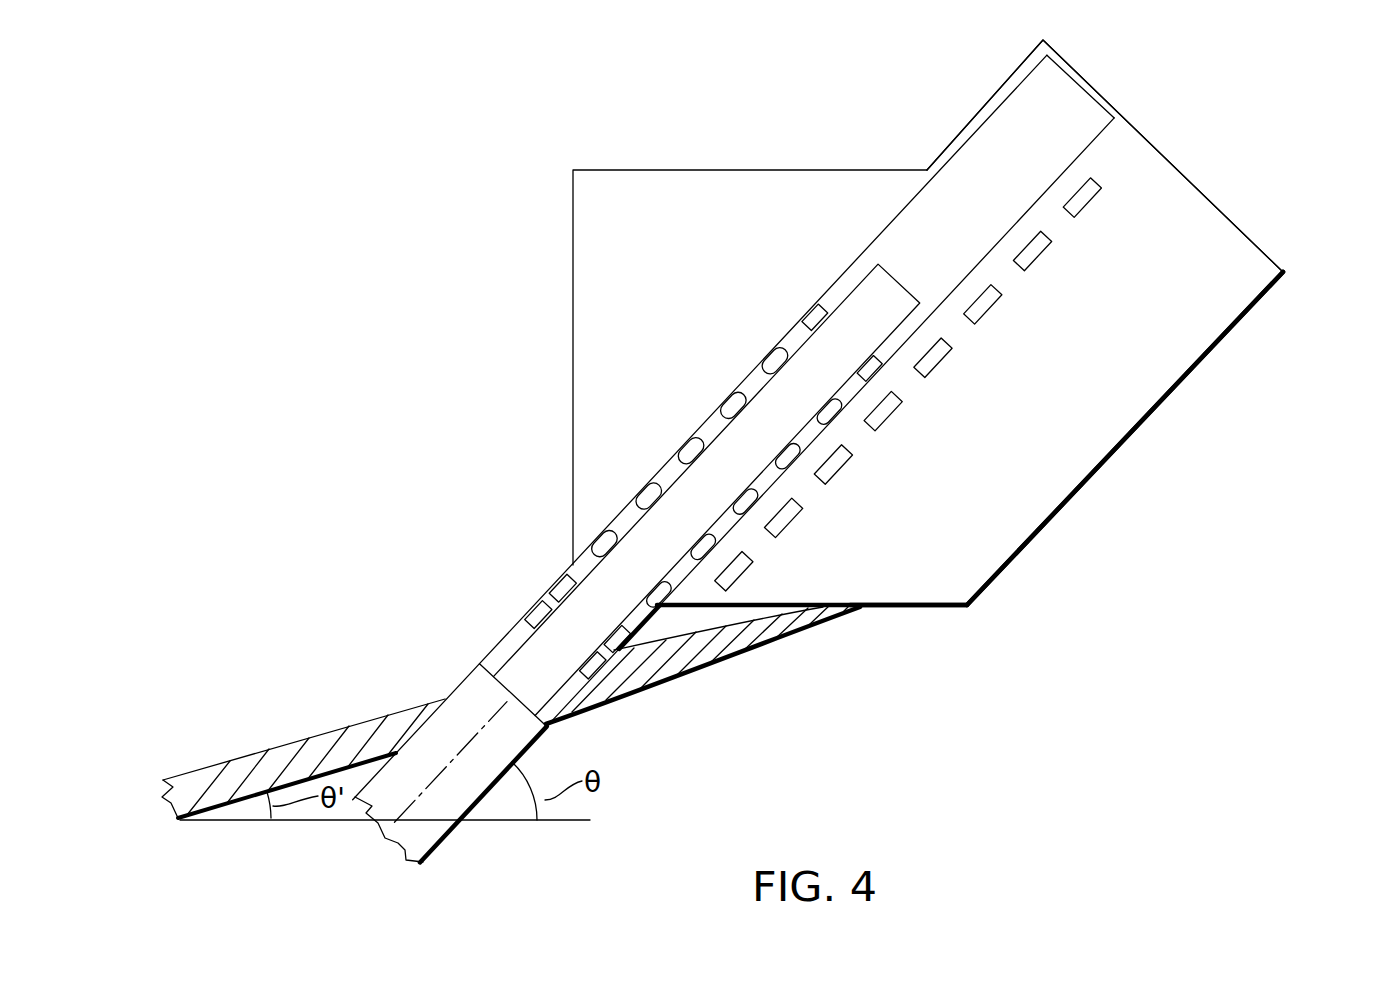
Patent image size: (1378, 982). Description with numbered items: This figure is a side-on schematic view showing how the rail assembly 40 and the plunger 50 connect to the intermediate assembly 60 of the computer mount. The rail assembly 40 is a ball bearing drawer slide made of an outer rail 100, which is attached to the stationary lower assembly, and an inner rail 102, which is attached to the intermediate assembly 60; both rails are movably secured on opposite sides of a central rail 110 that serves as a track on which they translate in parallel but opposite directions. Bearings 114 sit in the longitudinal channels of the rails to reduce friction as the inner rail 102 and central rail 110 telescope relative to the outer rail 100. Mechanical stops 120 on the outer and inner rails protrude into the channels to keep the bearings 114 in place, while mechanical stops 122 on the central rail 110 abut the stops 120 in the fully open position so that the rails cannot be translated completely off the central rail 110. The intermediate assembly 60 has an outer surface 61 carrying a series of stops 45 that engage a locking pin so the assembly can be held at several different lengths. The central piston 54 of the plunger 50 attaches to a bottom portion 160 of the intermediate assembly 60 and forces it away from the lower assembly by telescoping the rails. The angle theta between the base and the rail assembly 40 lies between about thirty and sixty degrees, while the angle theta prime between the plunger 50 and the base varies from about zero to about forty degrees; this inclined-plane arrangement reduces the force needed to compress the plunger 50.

The rail assembly 40 is at (456, 557).
The stops 45 is at (1028, 258).
The plunger 50 is at (320, 706).
The central piston 54 is at (720, 652).
The intermediate assembly 60 is at (1238, 277).
The outer surface 61 is at (1072, 452).
The outer rail 100 is at (457, 688).
The inner rail 102 is at (1075, 97).
The central rail 110 is at (527, 662).
The bearings 114 is at (737, 397).
The mechanical stops 120 is at (810, 312).
The mechanical stops 122 is at (567, 583).
The bottom portion 160 is at (900, 612).